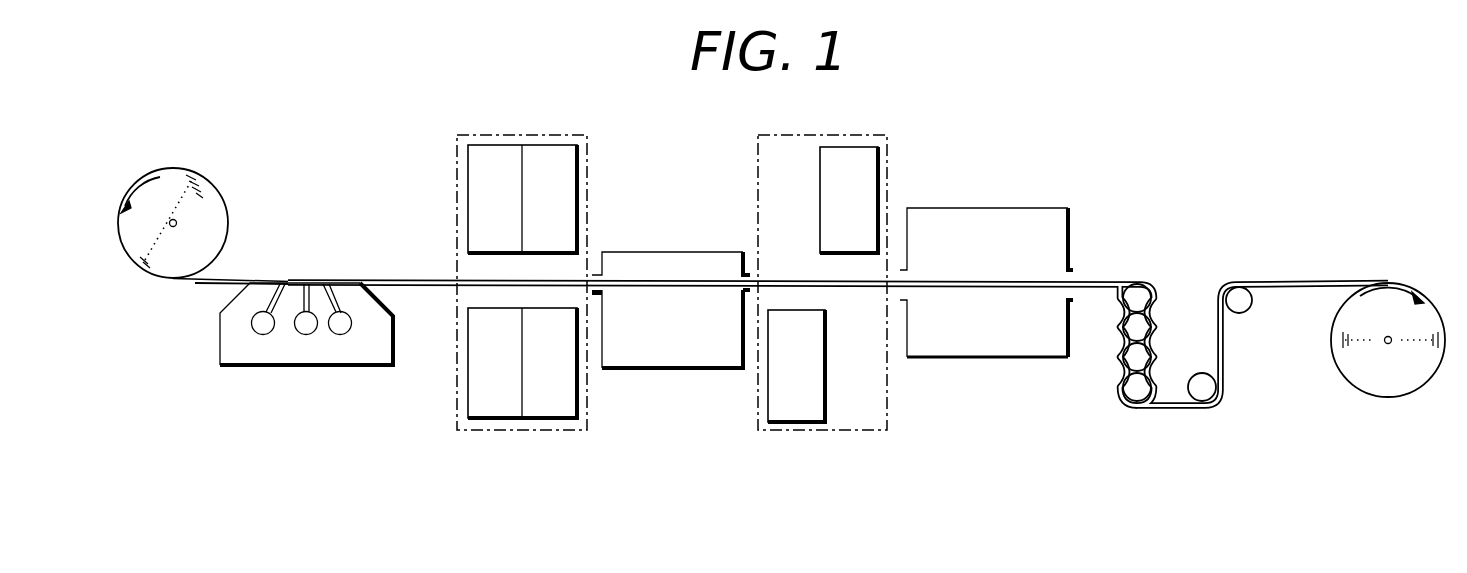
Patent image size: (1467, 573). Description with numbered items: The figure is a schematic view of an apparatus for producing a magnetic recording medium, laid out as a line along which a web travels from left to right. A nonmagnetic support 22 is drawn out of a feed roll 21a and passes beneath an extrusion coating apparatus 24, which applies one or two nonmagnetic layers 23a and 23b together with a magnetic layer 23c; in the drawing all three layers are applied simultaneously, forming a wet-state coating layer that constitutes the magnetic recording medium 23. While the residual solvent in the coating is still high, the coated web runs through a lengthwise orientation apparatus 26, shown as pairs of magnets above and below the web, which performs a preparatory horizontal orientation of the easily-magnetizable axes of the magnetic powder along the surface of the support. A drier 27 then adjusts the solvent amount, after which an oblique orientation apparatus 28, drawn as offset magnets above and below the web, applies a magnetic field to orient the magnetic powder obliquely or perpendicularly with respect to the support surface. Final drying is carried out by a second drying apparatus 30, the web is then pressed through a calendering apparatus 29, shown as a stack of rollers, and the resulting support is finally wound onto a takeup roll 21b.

The feed roll 21a is at (173, 168).
The takeup roll 21b is at (1380, 397).
The nonmagnetic support 22 is at (200, 282).
The magnetic recording medium 23 is at (422, 286).
The nonmagnetic layer 23a is at (258, 327).
The nonmagnetic layer 23b is at (300, 328).
The magnetic layer 23c is at (343, 331).
The coating apparatus 24 is at (310, 360).
The lengthwise orientation apparatus 26 is at (518, 431).
The drier 27 is at (668, 372).
The oblique orientation apparatus 28 is at (840, 432).
The calendering apparatus 29 is at (1143, 418).
The drier 30 is at (987, 357).